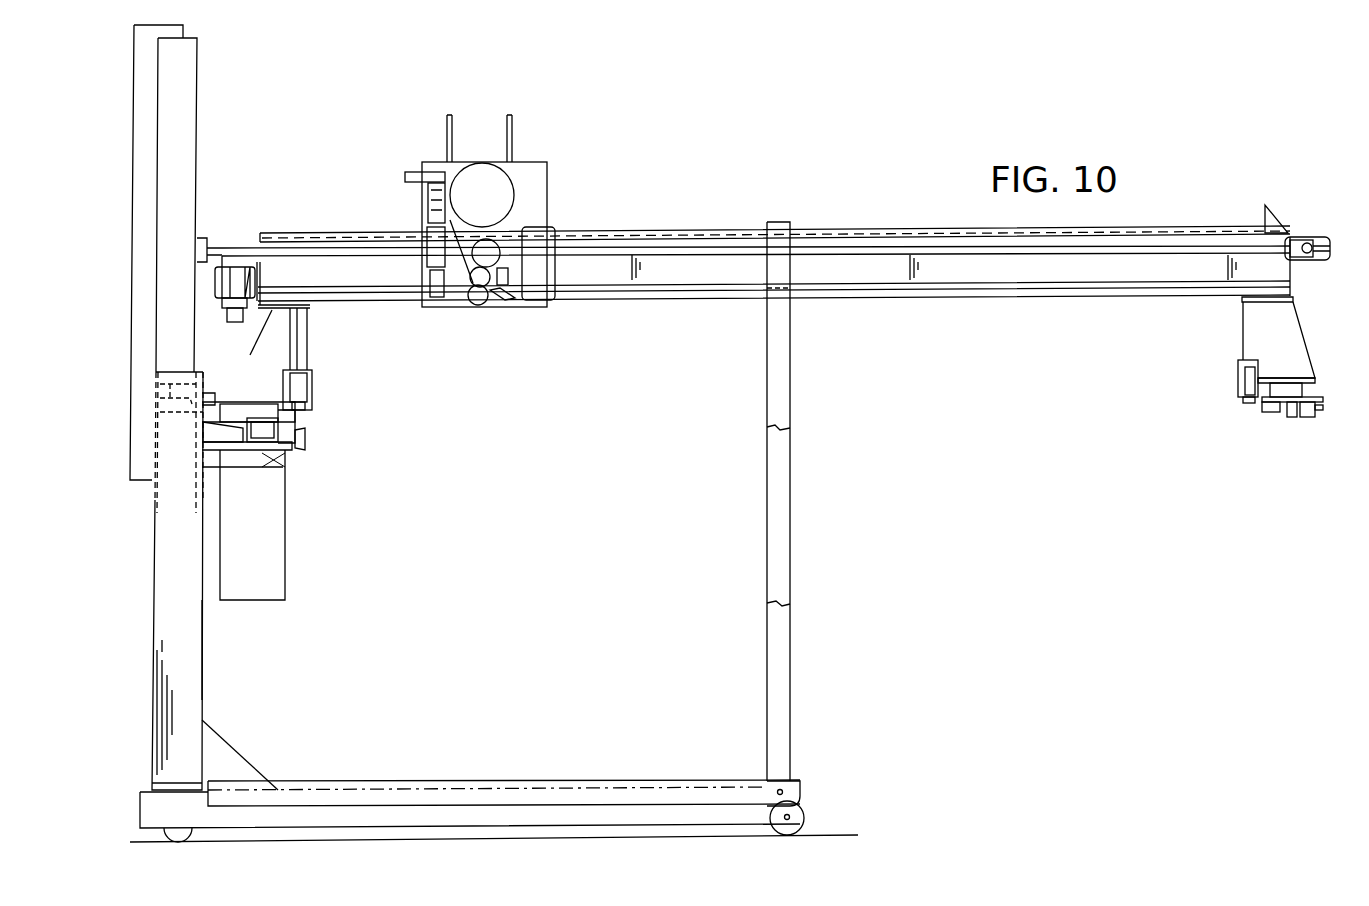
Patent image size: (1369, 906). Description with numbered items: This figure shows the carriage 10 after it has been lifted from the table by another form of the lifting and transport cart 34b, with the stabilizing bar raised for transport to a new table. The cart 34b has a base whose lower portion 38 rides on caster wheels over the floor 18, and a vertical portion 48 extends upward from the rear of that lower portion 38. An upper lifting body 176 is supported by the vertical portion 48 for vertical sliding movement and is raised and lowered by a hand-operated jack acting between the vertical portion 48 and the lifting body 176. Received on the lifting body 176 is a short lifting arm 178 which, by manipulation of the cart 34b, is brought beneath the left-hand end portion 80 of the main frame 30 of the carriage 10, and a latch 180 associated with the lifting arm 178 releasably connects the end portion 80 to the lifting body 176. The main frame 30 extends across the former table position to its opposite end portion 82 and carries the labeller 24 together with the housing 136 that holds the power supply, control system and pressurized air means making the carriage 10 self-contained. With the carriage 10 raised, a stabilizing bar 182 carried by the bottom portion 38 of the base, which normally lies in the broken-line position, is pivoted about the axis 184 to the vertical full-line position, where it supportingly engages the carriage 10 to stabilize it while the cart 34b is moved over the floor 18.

The carriage 10 is at (769, 239).
The floor 18 is at (837, 835).
The labeller 24 is at (557, 192).
The main frame 30 is at (1282, 272).
The lifting and transport cart 34b is at (153, 585).
The lower portion 38 is at (620, 780).
The vertical portion 48 is at (195, 607).
The end portion 80 is at (285, 350).
The end portion 82 is at (1252, 327).
The housing 136 is at (273, 545).
The upper lifting body 176 is at (185, 196).
The lifting arm 178 is at (275, 462).
The latch 180 is at (245, 400).
The stabilizing bar 182 is at (777, 503).
The axis 184 is at (790, 790).